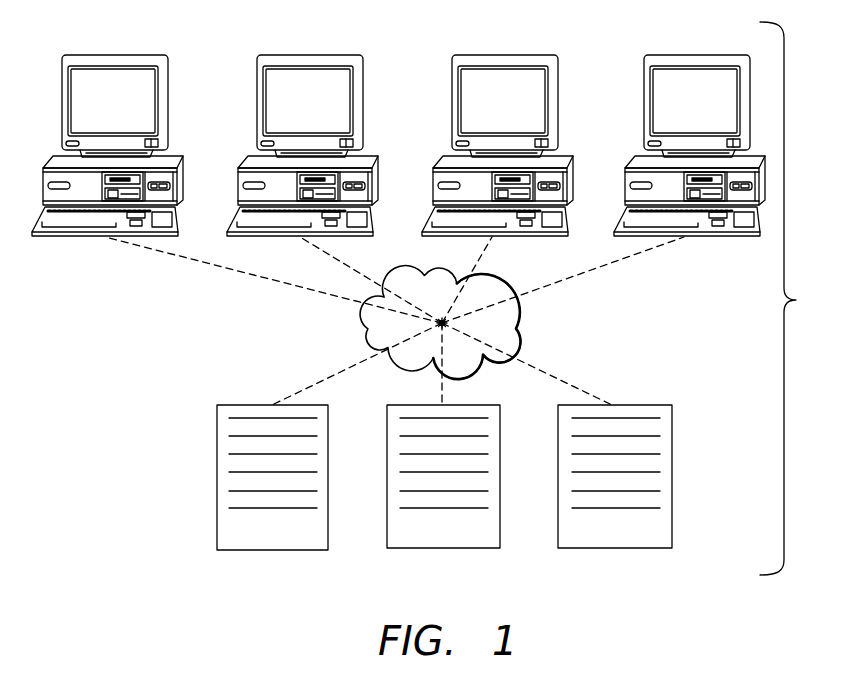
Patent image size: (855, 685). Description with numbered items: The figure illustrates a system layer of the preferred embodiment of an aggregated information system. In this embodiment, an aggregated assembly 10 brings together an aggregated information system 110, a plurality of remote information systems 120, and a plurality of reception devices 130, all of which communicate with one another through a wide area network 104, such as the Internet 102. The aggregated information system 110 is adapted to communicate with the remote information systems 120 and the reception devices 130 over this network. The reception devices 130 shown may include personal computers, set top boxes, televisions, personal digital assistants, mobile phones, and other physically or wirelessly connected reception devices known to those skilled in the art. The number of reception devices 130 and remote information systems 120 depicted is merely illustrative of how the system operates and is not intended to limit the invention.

The aggregated assembly 10 is at (793, 298).
The Internet 102 is at (529, 303).
The wide area network 104 is at (188, 258).
The aggregated information system 110 is at (443, 548).
The remote information systems 120 is at (273, 550).
The reception devices 130 is at (88, 56).